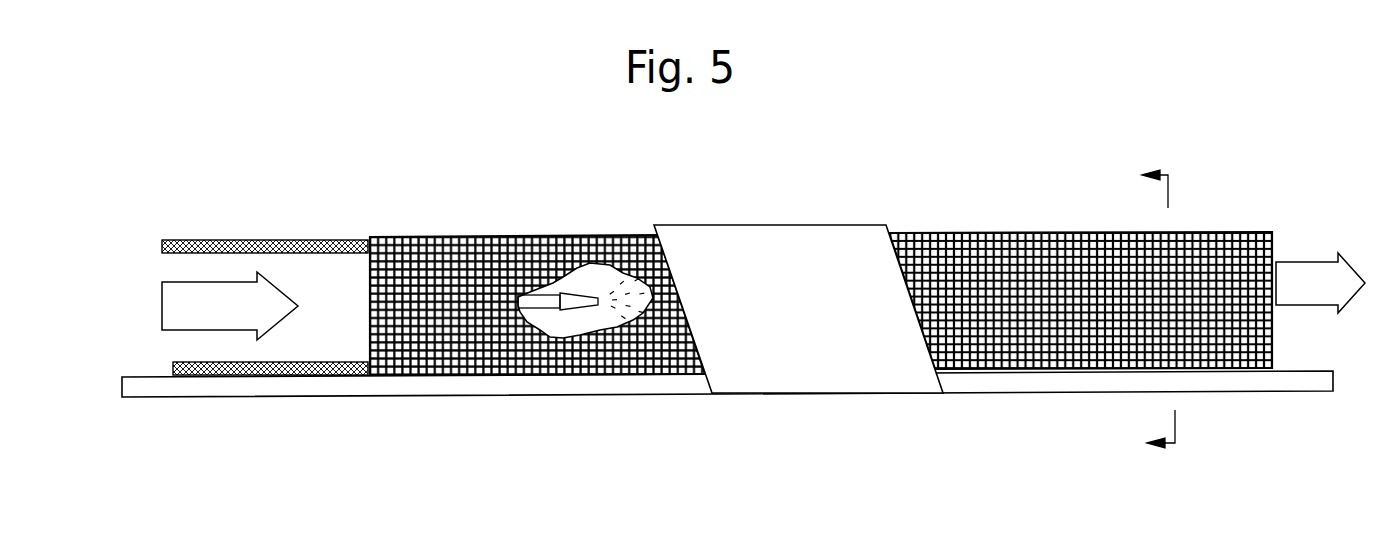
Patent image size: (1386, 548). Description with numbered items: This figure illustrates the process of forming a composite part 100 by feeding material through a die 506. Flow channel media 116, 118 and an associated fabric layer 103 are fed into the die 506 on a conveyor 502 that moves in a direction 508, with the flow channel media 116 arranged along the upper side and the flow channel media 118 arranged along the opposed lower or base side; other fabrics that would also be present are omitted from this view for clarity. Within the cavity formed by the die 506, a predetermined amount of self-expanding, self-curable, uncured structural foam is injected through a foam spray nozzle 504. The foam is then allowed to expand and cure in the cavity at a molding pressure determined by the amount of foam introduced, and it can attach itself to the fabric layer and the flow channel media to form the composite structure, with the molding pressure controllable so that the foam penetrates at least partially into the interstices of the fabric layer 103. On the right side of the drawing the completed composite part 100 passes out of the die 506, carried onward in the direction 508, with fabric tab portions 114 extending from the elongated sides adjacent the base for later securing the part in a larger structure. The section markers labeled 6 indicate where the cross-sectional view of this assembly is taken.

The composite part 100 is at (1054, 182).
The conveyor 502 is at (565, 397).
The flow channel media 116 is at (215, 240).
The flow channel media 118 is at (267, 374).
The fabric layer 103 is at (368, 340).
The fabric tab portions 114 is at (1275, 368).
The foam spray nozzle 504 is at (581, 300).
The die 506 is at (798, 225).
The direction 508 is at (763, 296).
The section line 6- 6 is at (1148, 306).